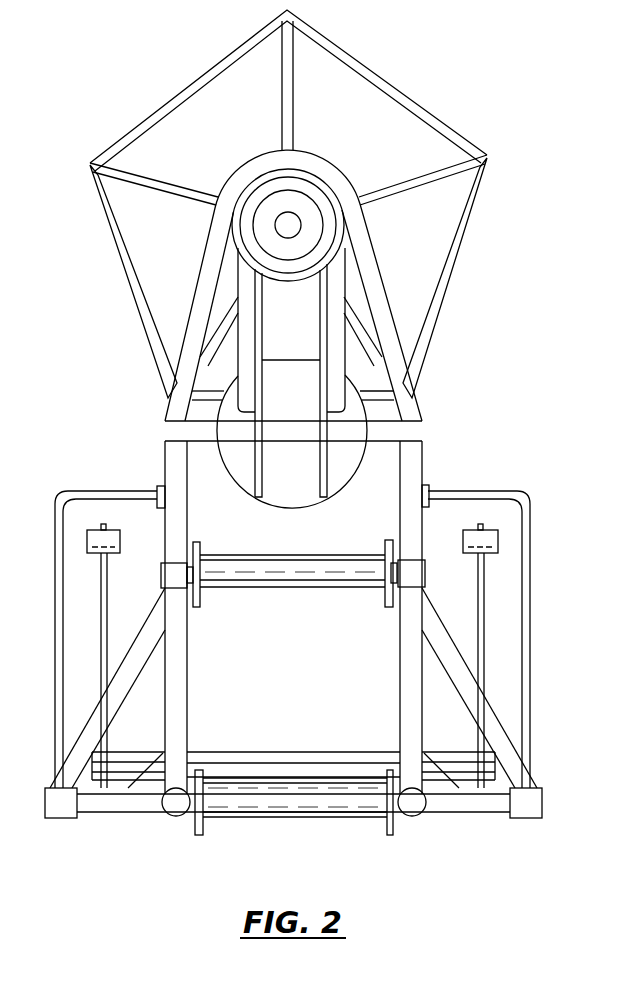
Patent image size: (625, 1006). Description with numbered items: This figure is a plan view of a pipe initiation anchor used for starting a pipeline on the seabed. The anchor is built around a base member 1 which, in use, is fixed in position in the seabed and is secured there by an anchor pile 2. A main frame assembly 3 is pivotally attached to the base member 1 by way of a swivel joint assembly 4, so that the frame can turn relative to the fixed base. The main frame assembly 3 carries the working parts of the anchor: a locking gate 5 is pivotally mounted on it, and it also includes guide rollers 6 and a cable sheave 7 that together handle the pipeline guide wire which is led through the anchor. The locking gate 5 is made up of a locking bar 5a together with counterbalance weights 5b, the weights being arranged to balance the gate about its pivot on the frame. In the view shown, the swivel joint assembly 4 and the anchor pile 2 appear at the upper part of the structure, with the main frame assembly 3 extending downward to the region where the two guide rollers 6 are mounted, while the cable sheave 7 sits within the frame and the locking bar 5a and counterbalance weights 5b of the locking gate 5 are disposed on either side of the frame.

The base member 1 is at (143, 127).
The anchor pile 2 is at (308, 212).
The main frame assembly 3 is at (170, 455).
The swivel joint assembly 4 is at (236, 160).
The locking gate 5 is at (103, 646).
The locking bar 5a is at (307, 753).
The counterbalance weights 5b is at (93, 537).
The guide rollers 6 is at (315, 577).
The cable sheave 7 is at (340, 475).